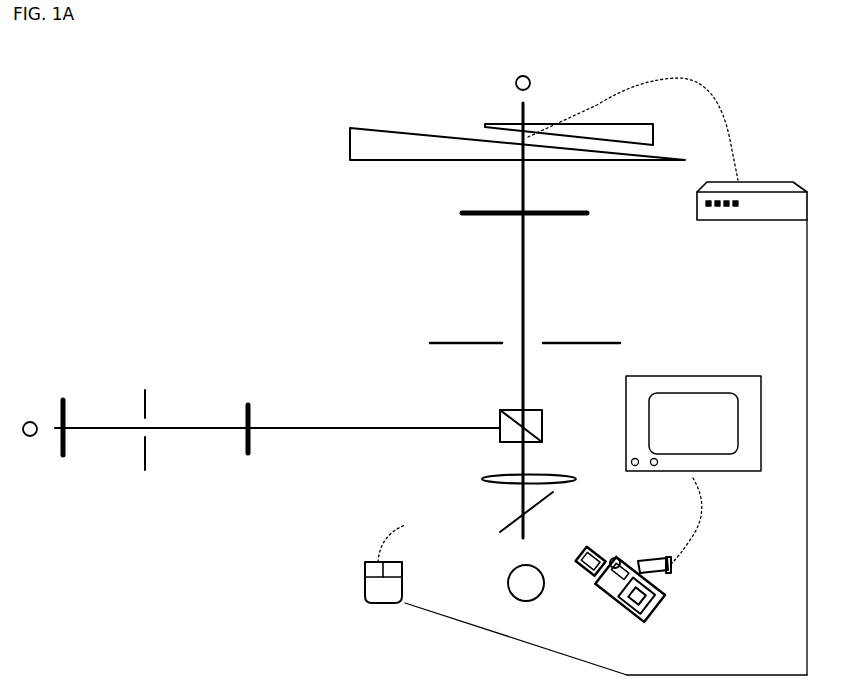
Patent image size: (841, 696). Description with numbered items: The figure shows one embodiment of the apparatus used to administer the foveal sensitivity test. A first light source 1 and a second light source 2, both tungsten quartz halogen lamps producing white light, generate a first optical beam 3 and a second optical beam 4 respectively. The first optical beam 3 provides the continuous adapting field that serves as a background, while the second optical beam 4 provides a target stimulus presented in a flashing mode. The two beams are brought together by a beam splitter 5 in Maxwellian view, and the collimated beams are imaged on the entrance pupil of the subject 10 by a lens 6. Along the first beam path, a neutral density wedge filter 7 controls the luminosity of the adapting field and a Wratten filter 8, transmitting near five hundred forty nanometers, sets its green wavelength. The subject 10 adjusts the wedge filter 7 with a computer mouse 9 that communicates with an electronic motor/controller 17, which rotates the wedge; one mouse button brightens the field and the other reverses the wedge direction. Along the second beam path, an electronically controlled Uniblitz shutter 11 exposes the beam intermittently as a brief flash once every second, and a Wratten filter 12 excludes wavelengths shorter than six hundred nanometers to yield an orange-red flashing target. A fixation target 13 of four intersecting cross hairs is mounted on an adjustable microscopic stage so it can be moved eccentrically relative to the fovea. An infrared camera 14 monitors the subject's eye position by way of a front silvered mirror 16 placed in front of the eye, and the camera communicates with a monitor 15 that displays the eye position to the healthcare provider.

The first light source 1 is at (523, 73).
The second light source 2 is at (261, 415).
The first optical beam 3 is at (535, 320).
The second optical beam 4 is at (247, 415).
The beam splitter 5 is at (530, 426).
The lens 6 is at (539, 480).
The neutral density wedge filter 7 is at (503, 142).
The Wratten #58 filter 8 is at (536, 214).
The computer mouse 9 is at (385, 579).
The subject 10 is at (526, 597).
The Uniblitz shutter 11 is at (146, 416).
The Wratten #25 filter 12 is at (63, 444).
The fixation target 13 is at (540, 344).
The infrared camera 14 is at (623, 597).
The monitor 15 is at (708, 469).
The front silvered mirror 16 is at (532, 512).
The electronic motor/controller 17 is at (667, 163).